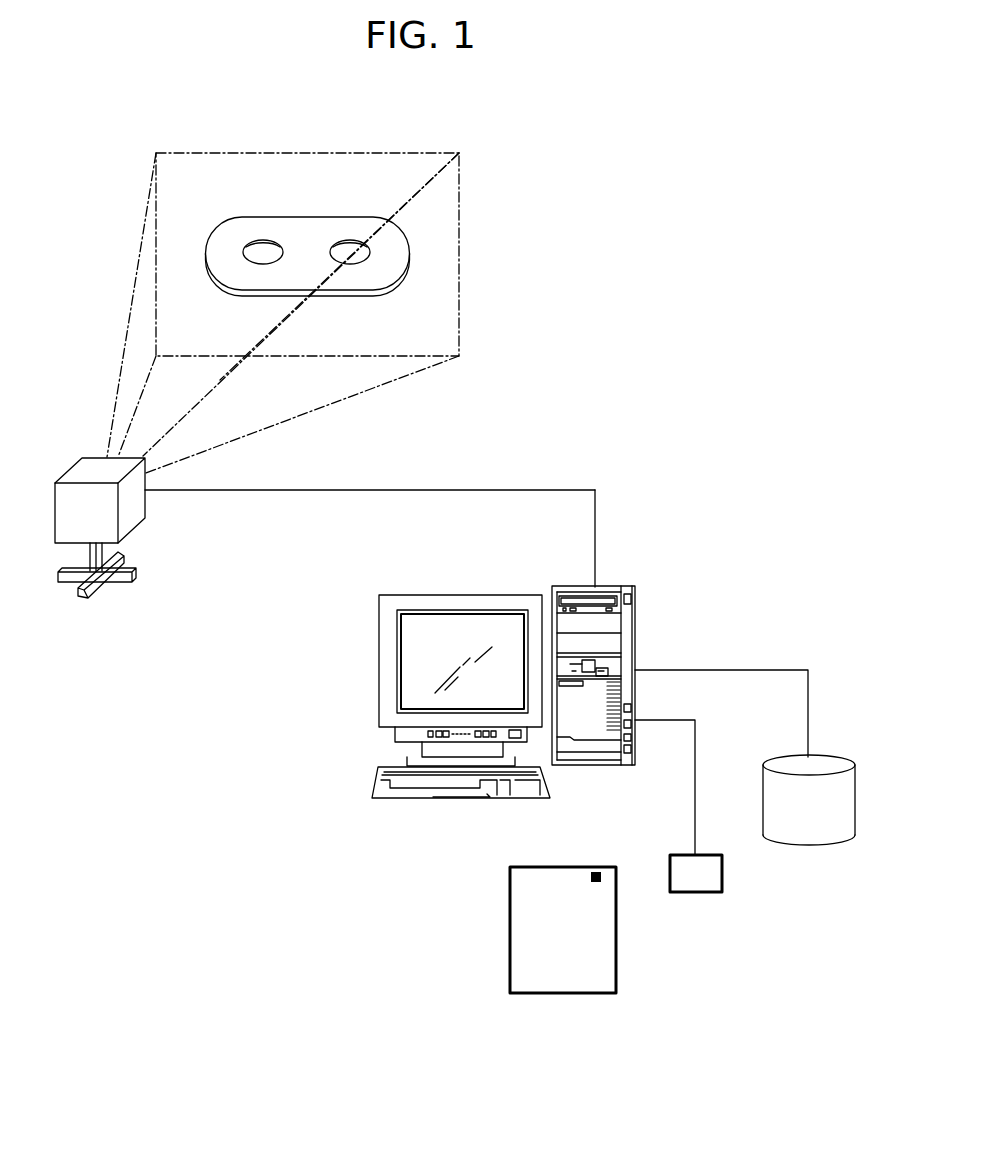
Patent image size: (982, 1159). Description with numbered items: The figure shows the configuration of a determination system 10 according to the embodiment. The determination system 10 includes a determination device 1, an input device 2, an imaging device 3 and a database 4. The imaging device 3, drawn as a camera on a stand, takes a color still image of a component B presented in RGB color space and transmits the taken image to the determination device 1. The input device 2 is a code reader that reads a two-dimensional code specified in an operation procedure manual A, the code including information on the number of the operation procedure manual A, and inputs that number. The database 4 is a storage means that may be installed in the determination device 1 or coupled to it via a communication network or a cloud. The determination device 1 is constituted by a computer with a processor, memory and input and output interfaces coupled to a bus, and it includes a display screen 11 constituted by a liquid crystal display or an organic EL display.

The determination device 1 is at (573, 586).
The input device 2 is at (708, 855).
The imaging device 3 is at (60, 498).
The database 4 is at (830, 762).
The determination system 10 is at (687, 547).
The display screen 11 is at (407, 637).
The operation procedure manual A is at (565, 870).
The component B is at (302, 224).